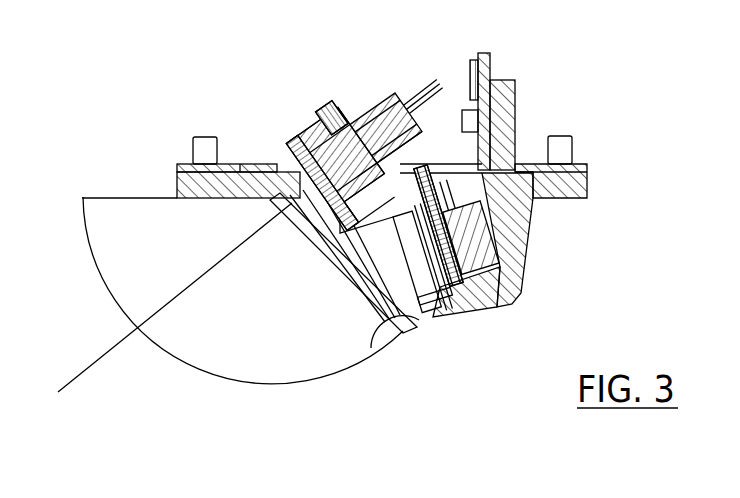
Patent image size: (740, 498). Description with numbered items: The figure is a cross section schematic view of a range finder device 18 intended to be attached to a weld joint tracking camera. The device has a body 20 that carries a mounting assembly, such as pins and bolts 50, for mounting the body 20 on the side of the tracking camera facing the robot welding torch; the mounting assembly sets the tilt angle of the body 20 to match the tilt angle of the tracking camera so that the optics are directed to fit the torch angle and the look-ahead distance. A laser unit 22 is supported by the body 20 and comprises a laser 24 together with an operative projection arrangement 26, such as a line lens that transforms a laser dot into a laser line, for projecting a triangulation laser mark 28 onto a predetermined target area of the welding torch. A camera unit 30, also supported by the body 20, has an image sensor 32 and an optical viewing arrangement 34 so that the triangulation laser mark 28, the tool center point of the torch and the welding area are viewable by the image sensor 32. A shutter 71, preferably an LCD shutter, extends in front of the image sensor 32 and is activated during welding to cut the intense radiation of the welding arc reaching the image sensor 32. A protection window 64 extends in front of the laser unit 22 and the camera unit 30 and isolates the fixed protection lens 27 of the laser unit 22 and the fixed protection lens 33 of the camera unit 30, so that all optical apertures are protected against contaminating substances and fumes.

The range finder device 18 is at (566, 242).
The body 20 is at (580, 200).
The laser unit 22 is at (378, 85).
The laser 24 is at (372, 106).
The operative projection arrangement 26 is at (295, 140).
The fixed protection lens 27 is at (282, 150).
The triangulation laser mark 28 is at (102, 353).
The camera unit 30 is at (450, 196).
The image sensor 32 is at (500, 303).
The fixed protection lens 33 is at (430, 310).
The optical viewing arrangement 34 is at (392, 271).
The pins and bolts 50 is at (208, 140).
The protection window 64 is at (402, 332).
The shutter 71 is at (480, 310).